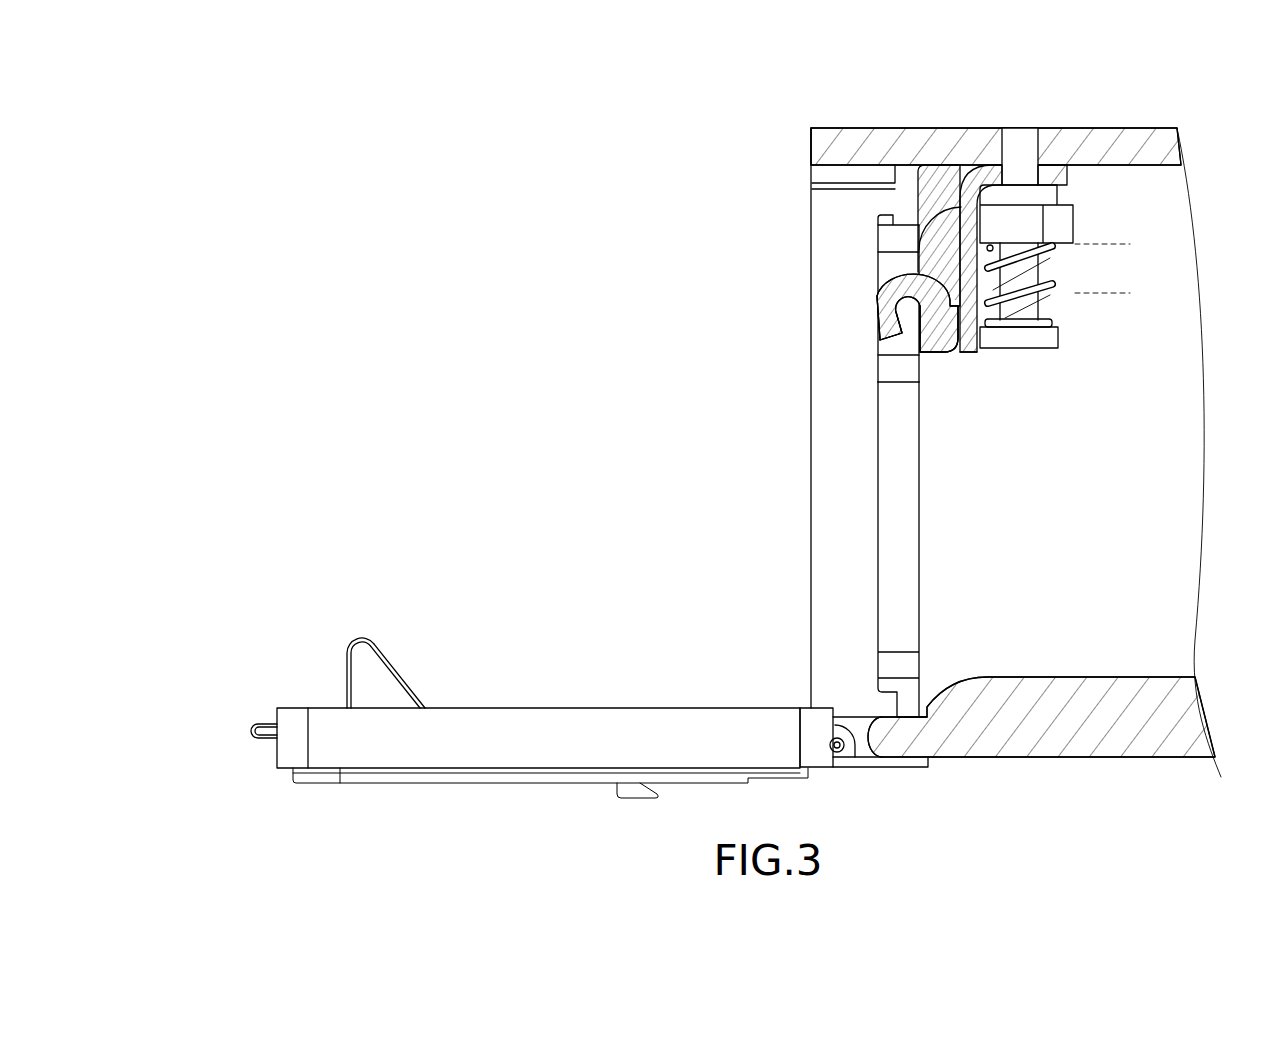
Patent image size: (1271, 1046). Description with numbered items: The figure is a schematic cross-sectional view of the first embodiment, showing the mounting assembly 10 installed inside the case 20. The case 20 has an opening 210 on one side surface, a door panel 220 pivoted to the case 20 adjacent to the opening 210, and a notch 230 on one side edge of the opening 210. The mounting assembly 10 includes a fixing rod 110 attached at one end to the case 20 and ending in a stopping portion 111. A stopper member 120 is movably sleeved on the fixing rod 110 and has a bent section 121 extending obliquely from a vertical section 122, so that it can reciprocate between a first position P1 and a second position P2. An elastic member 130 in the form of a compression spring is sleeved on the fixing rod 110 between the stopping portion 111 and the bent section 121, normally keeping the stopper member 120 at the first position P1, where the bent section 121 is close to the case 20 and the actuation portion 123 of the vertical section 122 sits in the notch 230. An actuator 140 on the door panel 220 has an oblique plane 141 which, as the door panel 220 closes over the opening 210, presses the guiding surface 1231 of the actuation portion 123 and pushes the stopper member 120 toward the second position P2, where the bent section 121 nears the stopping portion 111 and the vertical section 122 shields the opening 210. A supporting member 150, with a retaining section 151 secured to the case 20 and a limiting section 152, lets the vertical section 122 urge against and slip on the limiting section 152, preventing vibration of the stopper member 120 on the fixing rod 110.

The mounting assembly 10 is at (1171, 335).
The case 20 is at (859, 112).
The fixing rod 110 is at (1074, 338).
The stopping portion 111 is at (1027, 340).
The stopper member 120 is at (931, 191).
The bent section 121 is at (1063, 222).
The vertical section 122 is at (937, 344).
The actuation portion 123 is at (881, 318).
The guiding surface 1231 is at (877, 298).
The elastic member 130 is at (1064, 302).
The actuator 140 is at (345, 676).
The oblique plane 141 is at (405, 668).
The supporting member 150 is at (973, 154).
The retaining section 151 is at (941, 192).
The limiting section 152 is at (970, 351).
The opening 210 is at (900, 458).
The door panel 220 is at (389, 750).
The notch 230 is at (890, 260).
The first position P1 is at (1117, 244).
The second position P2 is at (1117, 293).